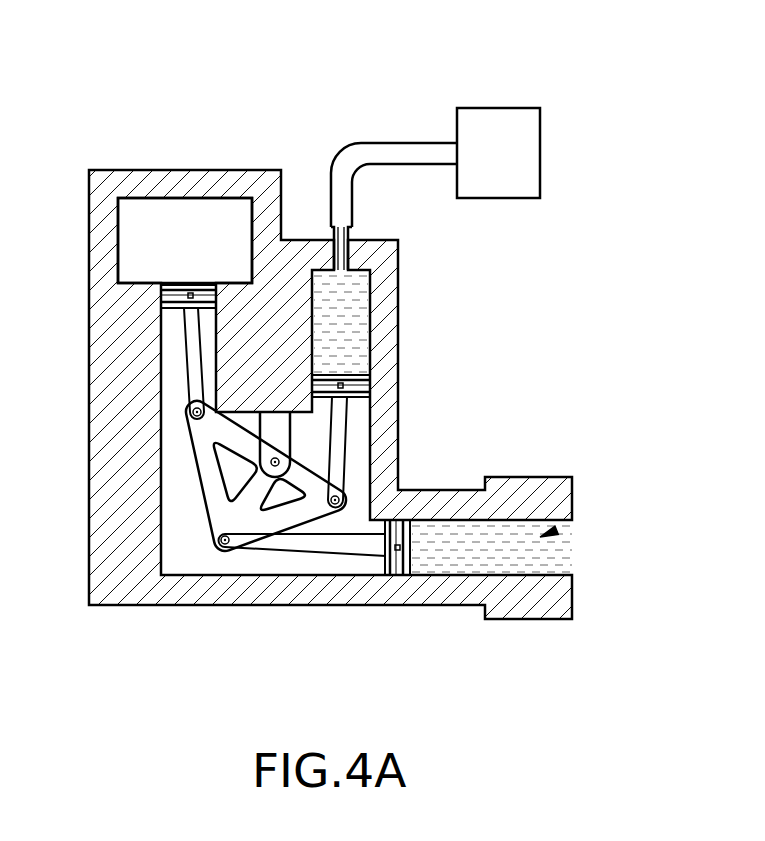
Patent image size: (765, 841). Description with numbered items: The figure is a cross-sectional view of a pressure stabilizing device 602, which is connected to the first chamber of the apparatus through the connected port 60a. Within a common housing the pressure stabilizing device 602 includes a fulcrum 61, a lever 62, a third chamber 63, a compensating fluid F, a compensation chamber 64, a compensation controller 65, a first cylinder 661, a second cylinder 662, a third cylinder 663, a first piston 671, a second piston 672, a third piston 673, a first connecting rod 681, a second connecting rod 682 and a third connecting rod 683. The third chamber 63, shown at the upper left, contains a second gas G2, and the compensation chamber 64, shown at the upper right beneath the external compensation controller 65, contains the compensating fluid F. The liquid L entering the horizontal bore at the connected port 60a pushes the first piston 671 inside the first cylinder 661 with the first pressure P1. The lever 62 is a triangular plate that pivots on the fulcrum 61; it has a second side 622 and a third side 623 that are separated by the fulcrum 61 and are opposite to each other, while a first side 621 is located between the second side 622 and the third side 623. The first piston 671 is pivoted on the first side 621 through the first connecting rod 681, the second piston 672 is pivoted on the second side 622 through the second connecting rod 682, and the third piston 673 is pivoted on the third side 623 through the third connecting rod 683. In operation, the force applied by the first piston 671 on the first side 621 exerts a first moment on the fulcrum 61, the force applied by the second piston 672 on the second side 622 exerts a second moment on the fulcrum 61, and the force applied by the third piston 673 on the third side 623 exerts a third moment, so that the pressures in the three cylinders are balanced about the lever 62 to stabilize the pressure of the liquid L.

The pressure stabilizing device 602 is at (688, 29).
The third chamber 63 is at (116, 243).
The second gas G2 is at (190, 212).
The third cylinder 663 is at (160, 340).
The third piston 673 is at (163, 309).
The third connecting rod 683 is at (192, 362).
The compensation controller 65 is at (503, 123).
The compensating fluid F is at (325, 282).
The compensation chamber 64 is at (372, 292).
The second cylinder 662 is at (372, 322).
The second piston 672 is at (358, 387).
The second connecting rod 682 is at (338, 442).
The fulcrum 61 is at (283, 458).
The lever 62 is at (198, 498).
The first side 621 is at (278, 520).
The second side 622 is at (307, 479).
The third side 623 is at (240, 441).
The first connecting rod 681 is at (313, 543).
The first cylinder 661 is at (455, 578).
The first piston 671 is at (385, 563).
The liquid L is at (511, 558).
The connected port 60a is at (573, 553).
The first pressure P1 is at (560, 529).